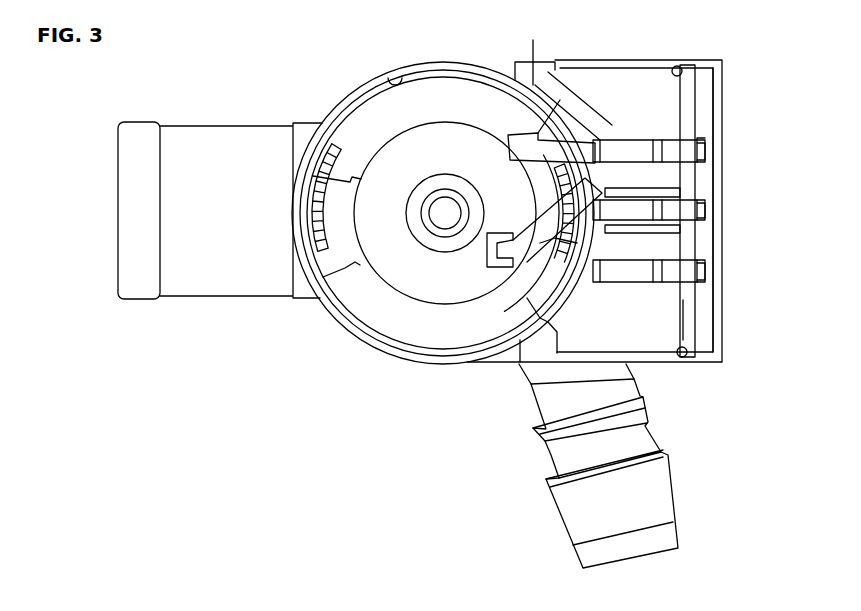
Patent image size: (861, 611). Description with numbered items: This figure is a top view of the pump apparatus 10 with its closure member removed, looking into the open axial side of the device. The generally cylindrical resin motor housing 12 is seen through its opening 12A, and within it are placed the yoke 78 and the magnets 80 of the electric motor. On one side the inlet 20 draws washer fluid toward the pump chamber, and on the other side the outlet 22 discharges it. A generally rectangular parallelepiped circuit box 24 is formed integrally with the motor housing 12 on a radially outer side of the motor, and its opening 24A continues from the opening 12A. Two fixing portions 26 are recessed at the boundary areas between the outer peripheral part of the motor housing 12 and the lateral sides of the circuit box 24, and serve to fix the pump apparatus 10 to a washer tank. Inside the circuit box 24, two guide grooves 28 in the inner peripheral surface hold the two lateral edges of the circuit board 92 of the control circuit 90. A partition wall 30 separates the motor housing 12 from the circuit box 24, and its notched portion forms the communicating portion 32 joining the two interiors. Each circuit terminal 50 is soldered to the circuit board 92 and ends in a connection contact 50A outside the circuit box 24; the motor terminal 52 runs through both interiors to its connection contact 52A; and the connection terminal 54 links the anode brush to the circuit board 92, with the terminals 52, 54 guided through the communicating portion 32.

The pump apparatus 10 is at (296, 50).
The motor housing 12 is at (362, 88).
The opening 12A is at (398, 80).
The inlet 20 is at (226, 302).
The outlet 22 is at (670, 480).
The circuit box 24 is at (723, 356).
The opening 24A is at (710, 350).
The fixing portion 26 is at (530, 60).
The guide groove 28 is at (678, 68).
The partition wall 30 is at (553, 107).
The communicating portion 32 is at (580, 107).
The circuit terminal 50 is at (655, 150).
The connection contact 50A is at (620, 152).
The motor terminal 52 is at (593, 137).
The connection contact 52A is at (605, 150).
The connection terminal 54 is at (520, 270).
The yoke 78 is at (365, 326).
The magnet 80 is at (365, 130).
The control circuit 90 is at (698, 317).
The circuit board 92 is at (680, 315).